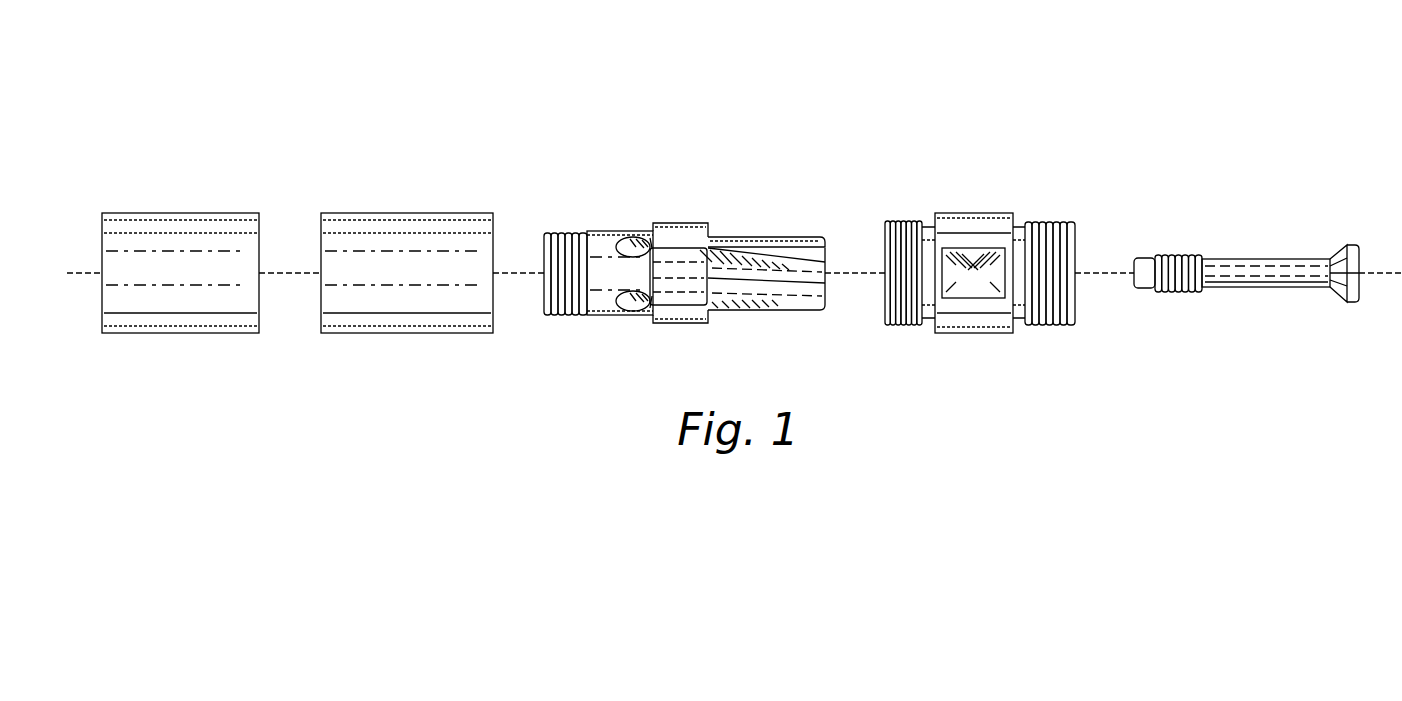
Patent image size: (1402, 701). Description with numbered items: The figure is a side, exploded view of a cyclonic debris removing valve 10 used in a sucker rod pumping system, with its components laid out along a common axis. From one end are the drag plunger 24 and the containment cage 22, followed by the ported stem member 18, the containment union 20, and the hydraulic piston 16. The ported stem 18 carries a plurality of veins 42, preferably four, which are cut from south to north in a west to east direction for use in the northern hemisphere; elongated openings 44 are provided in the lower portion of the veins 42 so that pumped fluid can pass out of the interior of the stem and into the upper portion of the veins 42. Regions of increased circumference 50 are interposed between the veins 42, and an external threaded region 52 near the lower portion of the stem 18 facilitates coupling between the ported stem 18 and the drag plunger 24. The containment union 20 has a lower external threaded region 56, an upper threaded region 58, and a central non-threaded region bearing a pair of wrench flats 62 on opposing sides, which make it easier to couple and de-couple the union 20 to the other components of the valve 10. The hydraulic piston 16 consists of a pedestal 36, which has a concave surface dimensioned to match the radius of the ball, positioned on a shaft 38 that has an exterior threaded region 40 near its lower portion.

The cyclonic debris removing valve 10 is at (671, 83).
The hydraulic piston 16 is at (1298, 205).
The ported stem member 18 is at (741, 186).
The containment union 20 is at (1000, 176).
The containment cage 22 is at (406, 213).
The drag plunger 24 is at (180, 213).
The pedestal 36 is at (1352, 302).
The shaft 38 is at (1262, 258).
The exterior threaded region 40 is at (1178, 293).
The veins 42 is at (792, 261).
The elongated openings 44 is at (629, 233).
The regions of increased circumference 50 is at (681, 223).
The external threaded region 52 is at (569, 317).
The lower external threaded region 56 is at (904, 327).
The upper threaded region 58 is at (1050, 327).
The wrench flats 62 is at (972, 260).